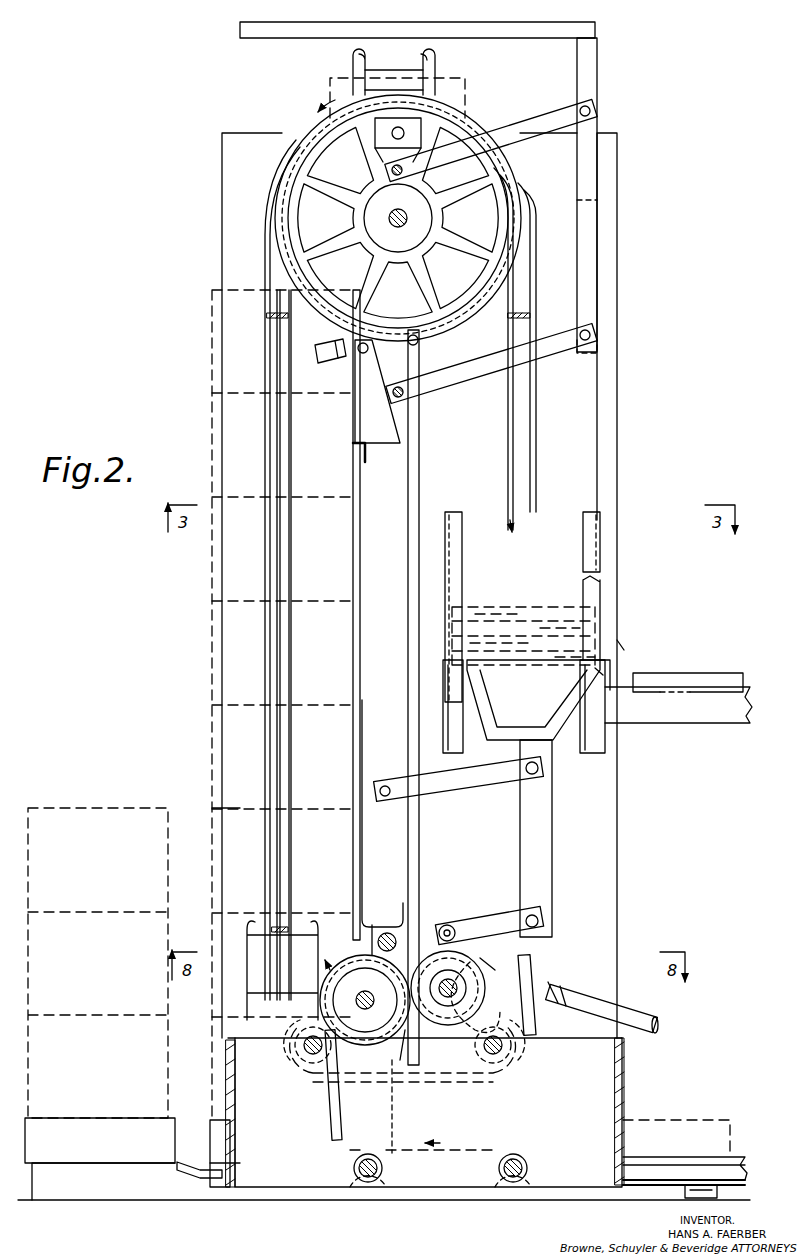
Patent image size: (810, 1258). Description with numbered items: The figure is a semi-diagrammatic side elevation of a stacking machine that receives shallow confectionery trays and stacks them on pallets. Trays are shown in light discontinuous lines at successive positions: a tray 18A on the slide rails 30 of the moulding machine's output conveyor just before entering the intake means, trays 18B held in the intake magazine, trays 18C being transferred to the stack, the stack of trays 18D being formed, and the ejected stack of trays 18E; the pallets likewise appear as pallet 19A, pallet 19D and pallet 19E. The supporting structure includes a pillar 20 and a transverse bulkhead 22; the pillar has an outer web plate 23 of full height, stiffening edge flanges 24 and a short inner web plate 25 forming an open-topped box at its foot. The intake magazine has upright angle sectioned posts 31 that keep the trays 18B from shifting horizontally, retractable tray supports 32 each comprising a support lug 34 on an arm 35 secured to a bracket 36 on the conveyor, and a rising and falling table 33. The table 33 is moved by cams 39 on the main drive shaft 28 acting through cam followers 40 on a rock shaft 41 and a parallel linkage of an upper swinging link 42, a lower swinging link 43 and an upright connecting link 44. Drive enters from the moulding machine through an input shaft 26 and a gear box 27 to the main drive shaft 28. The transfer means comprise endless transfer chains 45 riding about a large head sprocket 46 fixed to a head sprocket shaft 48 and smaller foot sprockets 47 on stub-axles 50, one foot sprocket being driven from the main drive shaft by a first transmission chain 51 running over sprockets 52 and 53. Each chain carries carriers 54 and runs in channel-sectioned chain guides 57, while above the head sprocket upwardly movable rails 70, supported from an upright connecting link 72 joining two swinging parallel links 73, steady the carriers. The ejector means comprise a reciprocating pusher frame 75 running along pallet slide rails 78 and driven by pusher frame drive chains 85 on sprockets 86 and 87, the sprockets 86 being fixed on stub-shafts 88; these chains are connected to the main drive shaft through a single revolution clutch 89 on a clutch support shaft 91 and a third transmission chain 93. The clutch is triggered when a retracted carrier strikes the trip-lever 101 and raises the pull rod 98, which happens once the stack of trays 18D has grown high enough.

The upwardly movable rails 70 is at (596, 31).
The upright connecting link 72 is at (598, 266).
The carriers 54 is at (442, 57).
The trays in C position 18C is at (345, 80).
The head sprocket 46 is at (480, 226).
The head sprocket shaft 48 is at (388, 218).
The endless transfer chains 45 is at (515, 174).
The swinging parallel links 73 is at (600, 110).
The chain guides 57 is at (537, 408).
The trip-lever 101 is at (331, 360).
The pull rod 98 is at (420, 430).
The transverse bulkhead 22 is at (352, 458).
The stack of trays in D position 18D is at (325, 721).
The upright angle sectioned posts 31 is at (455, 550).
The trays in B position 18B is at (515, 618).
The table 33 is at (556, 736).
The bracket 36 is at (445, 738).
The slide rails 30 is at (648, 716).
The tray in A position 18A is at (690, 677).
The arm 35 is at (604, 683).
The support lug 34 is at (622, 648).
The retractable tray supports 32 is at (604, 672).
The pillar 20 is at (637, 856).
The outer web plate 23 is at (622, 862).
The upper swinging link 42 is at (440, 788).
The upright connecting link 44 is at (527, 830).
The lower swinging link 43 is at (498, 922).
The cam followers 40 is at (432, 932).
The cams 39 is at (468, 955).
The rock shaft 41 is at (388, 934).
The clutch support shaft 91 is at (372, 924).
The single revolution clutch 89 is at (357, 977).
The main drive shaft 28 is at (483, 960).
The gear box 27 is at (497, 1010).
The first transmission chain 51 is at (536, 995).
The input shaft 26 is at (650, 1019).
The stub-axles 50 is at (300, 1043).
The foot sprockets 47 is at (275, 1066).
The sprockets 53 is at (520, 1050).
The sprockets 52 is at (443, 1028).
The third transmission chain 93 is at (391, 1113).
The inner web plate 25 is at (570, 1160).
The stiffening edge flanges 24 is at (224, 1134).
The stub-shafts 88 is at (360, 1172).
The sprockets 86 is at (372, 1182).
The pusher frame drive chains 85 is at (425, 1189).
The sprockets 87 is at (506, 1182).
The reciprocating pusher frame 75 is at (658, 1204).
The pallet in A position 19A is at (688, 1128).
The pallet in D position 19D is at (220, 1155).
The pallet slide rails 78 is at (103, 1190).
The pallet in E position 19E is at (100, 1140).
The stack of trays in E position 18E is at (98, 963).